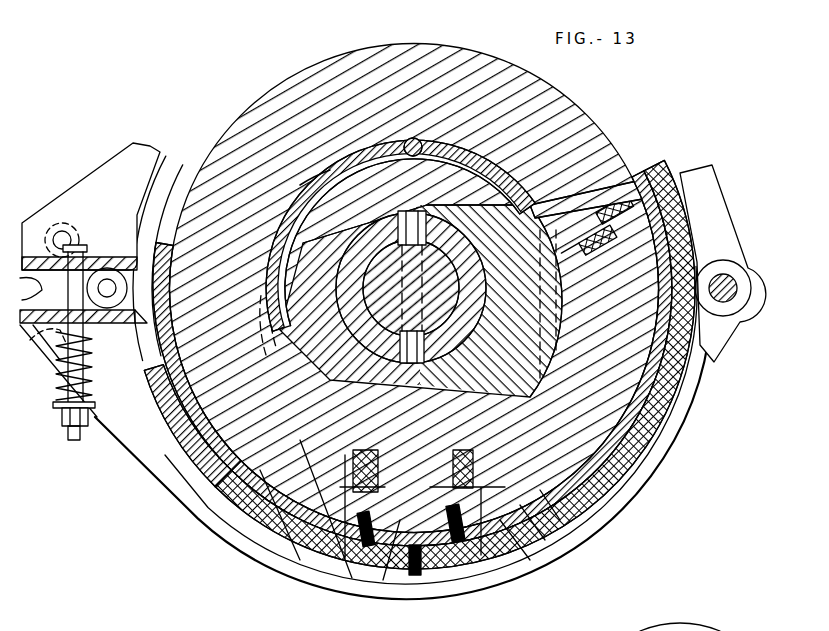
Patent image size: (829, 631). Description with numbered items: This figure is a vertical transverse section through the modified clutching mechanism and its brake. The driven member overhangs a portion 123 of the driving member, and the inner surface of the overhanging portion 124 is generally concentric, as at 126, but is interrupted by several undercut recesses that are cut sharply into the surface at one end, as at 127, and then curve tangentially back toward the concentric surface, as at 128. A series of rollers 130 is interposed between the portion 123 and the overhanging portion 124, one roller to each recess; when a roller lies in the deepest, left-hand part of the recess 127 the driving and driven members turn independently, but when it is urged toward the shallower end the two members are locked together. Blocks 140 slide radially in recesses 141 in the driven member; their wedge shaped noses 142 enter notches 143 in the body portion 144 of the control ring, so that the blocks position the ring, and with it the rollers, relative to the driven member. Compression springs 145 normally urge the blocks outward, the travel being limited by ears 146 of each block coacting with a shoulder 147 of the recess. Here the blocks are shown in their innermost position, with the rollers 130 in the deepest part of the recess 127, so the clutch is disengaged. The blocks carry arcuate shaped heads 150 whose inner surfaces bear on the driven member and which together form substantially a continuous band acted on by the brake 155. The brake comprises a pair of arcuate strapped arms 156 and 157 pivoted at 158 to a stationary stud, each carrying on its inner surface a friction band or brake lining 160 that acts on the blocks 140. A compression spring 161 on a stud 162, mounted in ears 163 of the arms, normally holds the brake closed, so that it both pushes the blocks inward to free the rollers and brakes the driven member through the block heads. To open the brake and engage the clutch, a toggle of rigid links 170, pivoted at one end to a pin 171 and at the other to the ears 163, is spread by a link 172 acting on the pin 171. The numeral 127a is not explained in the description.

The portion of the driving member 123 is at (540, 200).
The overhanging portion of the driven member 124 is at (416, 138).
The concentric inner surface 126 is at (297, 183).
The undercut recess 127 is at (398, 140).
The drum portion 127a is at (686, 626).
The tangentially curved surface 128 is at (478, 175).
The rollers 130 is at (430, 200).
The blocks 140 is at (390, 570).
The recesses 141 is at (290, 556).
The wedge shaped noses 142 is at (432, 470).
The notches 143 is at (470, 560).
The body portion of the control ring 144 is at (545, 492).
The compression springs 145 is at (250, 528).
The ears of the block 146 is at (530, 520).
The shoulder of the recess 147 is at (525, 532).
The arcuate shaped heads 150 is at (600, 476).
The brake 155 is at (668, 448).
The arcuate strapped arm 156 is at (678, 416).
The arcuate strapped arm 157 is at (705, 193).
The pivot 158 is at (738, 292).
The friction band or brake lining 160 is at (593, 503).
The compression spring 161 is at (53, 395).
The stud 162 is at (73, 442).
The ears of the brake arms 163 is at (100, 257).
The rigid arms or links 170 is at (77, 224).
The pivot pin 171 is at (160, 214).
The link 172 is at (35, 280).